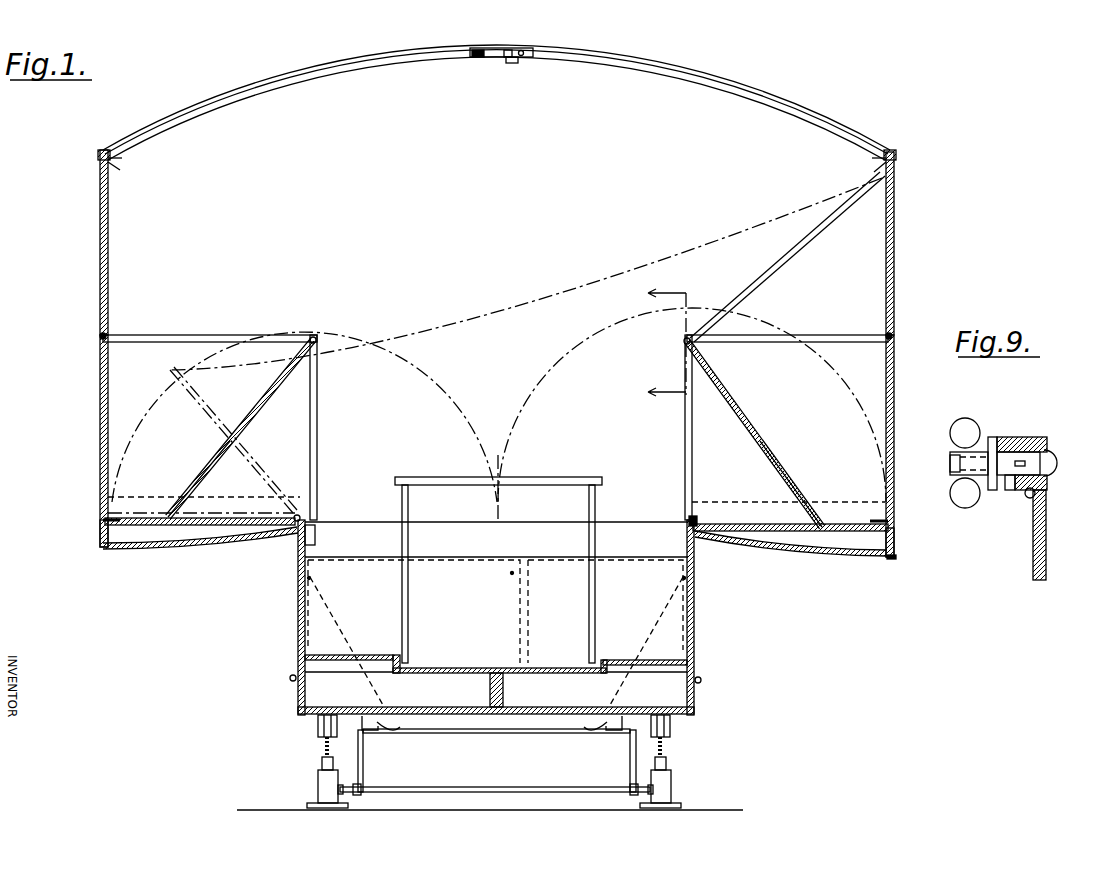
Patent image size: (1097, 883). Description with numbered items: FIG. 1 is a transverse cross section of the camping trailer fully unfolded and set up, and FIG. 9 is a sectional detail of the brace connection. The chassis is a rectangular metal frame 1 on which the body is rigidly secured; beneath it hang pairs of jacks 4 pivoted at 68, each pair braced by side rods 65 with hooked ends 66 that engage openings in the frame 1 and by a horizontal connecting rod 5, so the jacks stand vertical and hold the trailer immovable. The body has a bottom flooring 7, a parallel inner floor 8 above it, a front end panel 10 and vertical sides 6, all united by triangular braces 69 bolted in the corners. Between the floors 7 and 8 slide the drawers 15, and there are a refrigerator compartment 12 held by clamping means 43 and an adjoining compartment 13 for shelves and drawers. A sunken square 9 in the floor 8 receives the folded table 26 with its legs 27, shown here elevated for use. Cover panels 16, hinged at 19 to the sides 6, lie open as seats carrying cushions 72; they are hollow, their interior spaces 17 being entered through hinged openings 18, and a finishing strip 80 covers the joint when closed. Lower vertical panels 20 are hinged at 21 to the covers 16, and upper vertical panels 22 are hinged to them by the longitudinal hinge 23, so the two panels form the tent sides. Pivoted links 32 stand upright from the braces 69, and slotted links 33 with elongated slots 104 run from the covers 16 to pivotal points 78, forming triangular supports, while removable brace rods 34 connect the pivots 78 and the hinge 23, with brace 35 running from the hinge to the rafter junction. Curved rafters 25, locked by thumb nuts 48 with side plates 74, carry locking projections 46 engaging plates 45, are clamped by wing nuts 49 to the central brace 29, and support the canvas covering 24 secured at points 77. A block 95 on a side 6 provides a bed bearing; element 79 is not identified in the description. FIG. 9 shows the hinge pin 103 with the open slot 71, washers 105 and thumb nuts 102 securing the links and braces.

In FIG. 1, the frame 1 is at (460, 728).
In FIG. 1, the jacks 4 is at (322, 766).
In FIG. 1, the horizontal connecting rod 5 is at (515, 787).
In FIG. 1, the vertical sides 6 is at (298, 606).
In FIG. 1, the bottom flooring 7 is at (298, 714).
In FIG. 1, the inner floor 8 is at (372, 655).
In FIG. 1, the sunken square 9 is at (470, 660).
In FIG. 1, the front end panel 10 is at (437, 521).
In FIG. 1, the refrigerator compartment 12 is at (446, 572).
In FIG. 1, the compartment 13 is at (621, 572).
In FIG. 1, the drawers 15 is at (298, 684).
In FIG. 1, the cover panels 16 is at (200, 542).
In FIG. 1, the interior spaces 17 is at (150, 538).
In FIG. 1, the hinged openings 18 is at (186, 526).
In FIG. 1, the hinge 19 is at (497, 531).
In FIG. 1, the lower vertical panels 20 is at (100, 430).
In FIG. 1, the hinges 21 is at (100, 519).
In FIG. 1, the upper vertical panels 22 is at (100, 250).
In FIG. 1, the longitudinal hinge 23 is at (100, 338).
In FIG. 1, the canvas covering 24 is at (252, 97).
In FIG. 1, the rafters 25 is at (262, 88).
In FIG. 1, the table 26 is at (571, 478).
In FIG. 1, the legs 27 is at (596, 504).
In FIG. 1, the central brace 29 is at (523, 60).
In FIG. 1, the pivoted links 32 is at (317, 446).
In FIG. 9, the pivoted links 32 is at (1033, 562).
In FIG. 1, the links 33 is at (198, 484).
In FIG. 9, the links 33 is at (1040, 496).
In FIG. 1, the brace rod 34 is at (200, 334).
In FIG. 9, the brace rod 34 is at (1025, 437).
In FIG. 1, the brace 35 is at (784, 258).
In FIG. 9, the brace 35 is at (1007, 437).
In FIG. 1, the clamping means 43 is at (510, 573).
In FIG. 1, the plates 45 is at (110, 165).
In FIG. 1, the locking projections 46 is at (112, 158).
In FIG. 1, the thumb nut 48 is at (478, 60).
In FIG. 1, the wing nuts 49 is at (508, 64).
In FIG. 1, the side rods 65 is at (363, 768).
In FIG. 1, the hooked ends 66 is at (380, 726).
In FIG. 1, the pivot 68 is at (318, 730).
In FIG. 1, the triangular braces 69 is at (348, 628).
In FIG. 9, the open slot 71 is at (1004, 492).
In FIG. 1, the cushions 72 is at (136, 495).
In FIG. 1, the side plate 74 is at (534, 52).
In FIG. 1, the attachment points 77 is at (100, 152).
In FIG. 1, the pivotal points 78 is at (316, 337).
In FIG. 9, the pivotal points 78 is at (1052, 445).
In FIG. 1, the latch point 79 is at (306, 578).
In FIG. 1, the finishing strip 80 is at (894, 560).
In FIG. 1, the block 95 is at (315, 541).
In FIG. 9, the thumb nuts 102 is at (950, 446).
In FIG. 9, the hinge pin 103 is at (1030, 465).
In FIG. 1, the elongated slots 104 is at (270, 396).
In FIG. 9, the washers 105 is at (992, 436).